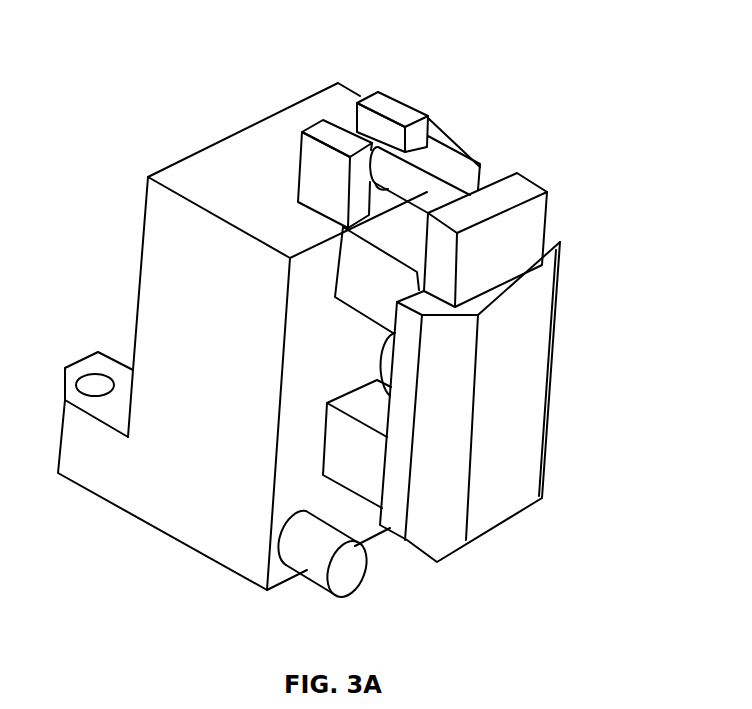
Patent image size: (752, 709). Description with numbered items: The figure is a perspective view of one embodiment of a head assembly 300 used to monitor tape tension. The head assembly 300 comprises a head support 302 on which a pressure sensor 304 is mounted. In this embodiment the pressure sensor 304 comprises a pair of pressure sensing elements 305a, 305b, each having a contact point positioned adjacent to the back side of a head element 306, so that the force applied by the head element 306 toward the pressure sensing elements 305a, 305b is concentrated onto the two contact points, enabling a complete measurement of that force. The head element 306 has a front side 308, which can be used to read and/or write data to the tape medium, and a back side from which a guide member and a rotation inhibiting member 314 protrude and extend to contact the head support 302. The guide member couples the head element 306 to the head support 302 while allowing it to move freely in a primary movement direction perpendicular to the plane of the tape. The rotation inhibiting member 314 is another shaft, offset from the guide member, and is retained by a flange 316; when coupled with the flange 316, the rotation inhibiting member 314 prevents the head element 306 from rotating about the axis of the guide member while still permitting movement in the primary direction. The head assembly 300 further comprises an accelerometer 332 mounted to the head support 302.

The head assembly 300 is at (115, 44).
The head support 302 is at (256, 133).
The pressure sensor 304 is at (531, 144).
The pressure sensing element 305a is at (357, 287).
The pressure sensing element 305b is at (337, 470).
The head element 306 is at (530, 389).
The front side 308 is at (540, 380).
The rotation inhibiting member 314 is at (445, 173).
The flange 316 is at (381, 115).
The accelerometer 332 is at (312, 568).